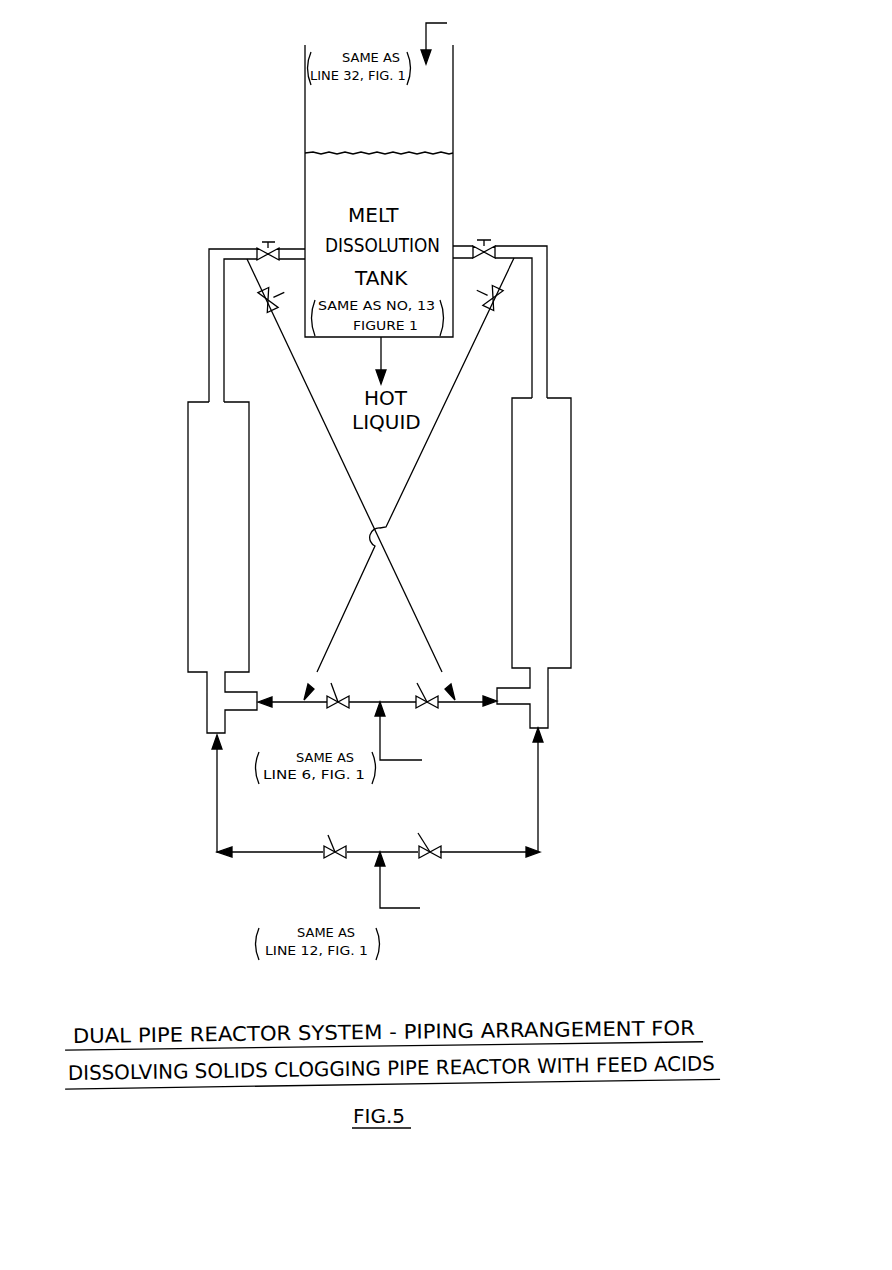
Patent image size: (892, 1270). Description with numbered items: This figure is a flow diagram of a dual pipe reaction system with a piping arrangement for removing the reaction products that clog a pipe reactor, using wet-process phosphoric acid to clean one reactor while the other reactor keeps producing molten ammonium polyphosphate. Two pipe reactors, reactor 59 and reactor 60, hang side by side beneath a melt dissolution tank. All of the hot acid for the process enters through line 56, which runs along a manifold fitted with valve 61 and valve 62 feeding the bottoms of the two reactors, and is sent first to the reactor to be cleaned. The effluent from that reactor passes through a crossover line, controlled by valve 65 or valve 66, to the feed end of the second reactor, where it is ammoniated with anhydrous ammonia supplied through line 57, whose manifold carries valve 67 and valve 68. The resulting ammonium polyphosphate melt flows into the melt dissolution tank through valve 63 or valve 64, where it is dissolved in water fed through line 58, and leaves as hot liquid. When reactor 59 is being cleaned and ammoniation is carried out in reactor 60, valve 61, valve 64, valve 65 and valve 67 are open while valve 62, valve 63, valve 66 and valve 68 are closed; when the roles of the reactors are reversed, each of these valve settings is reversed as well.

The line 56 is at (378, 722).
The line 57 is at (378, 872).
The line 58 is at (426, 44).
The reactor 59 is at (571, 523).
The reactor 60 is at (188, 522).
The valve 61 is at (421, 688).
The valve 62 is at (336, 686).
The valve 63 is at (484, 239).
The valve 64 is at (268, 241).
The valve 65 is at (496, 304).
The valve 66 is at (263, 305).
The valve 67 is at (328, 857).
The valve 68 is at (432, 857).